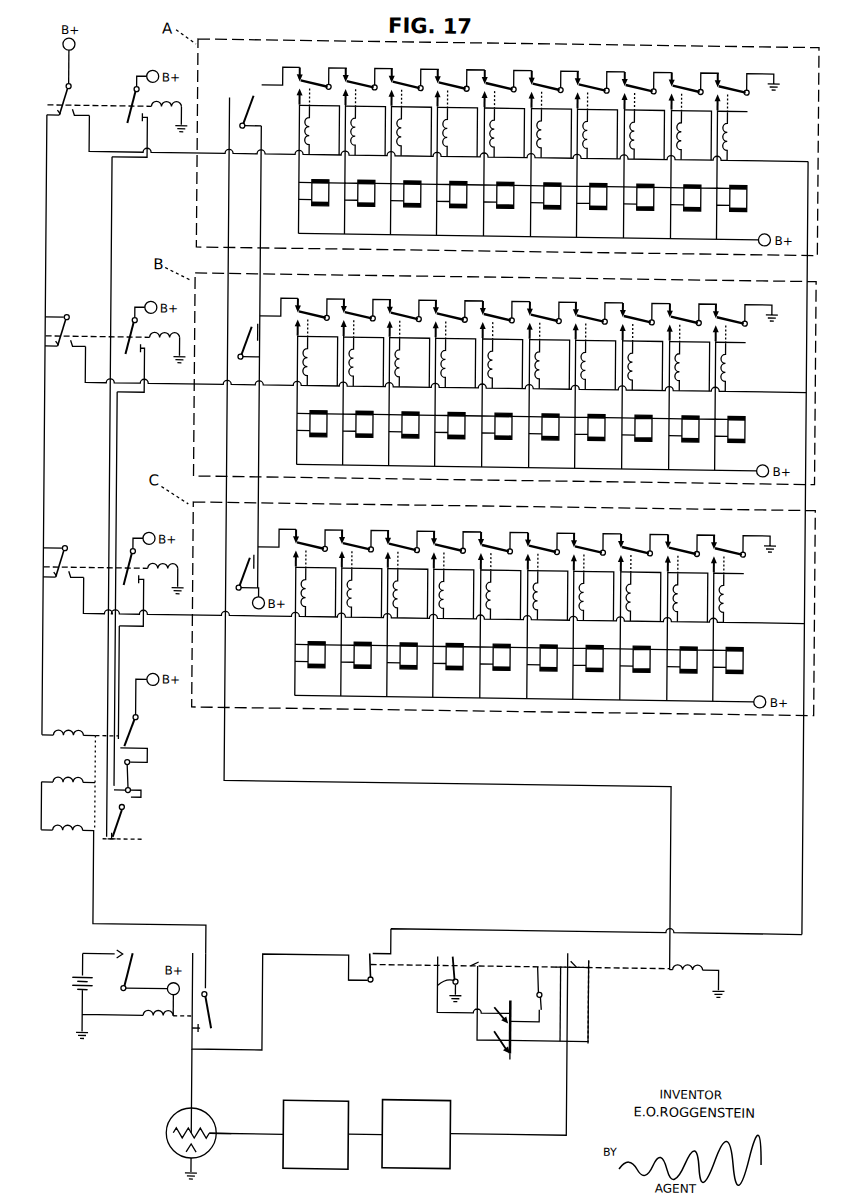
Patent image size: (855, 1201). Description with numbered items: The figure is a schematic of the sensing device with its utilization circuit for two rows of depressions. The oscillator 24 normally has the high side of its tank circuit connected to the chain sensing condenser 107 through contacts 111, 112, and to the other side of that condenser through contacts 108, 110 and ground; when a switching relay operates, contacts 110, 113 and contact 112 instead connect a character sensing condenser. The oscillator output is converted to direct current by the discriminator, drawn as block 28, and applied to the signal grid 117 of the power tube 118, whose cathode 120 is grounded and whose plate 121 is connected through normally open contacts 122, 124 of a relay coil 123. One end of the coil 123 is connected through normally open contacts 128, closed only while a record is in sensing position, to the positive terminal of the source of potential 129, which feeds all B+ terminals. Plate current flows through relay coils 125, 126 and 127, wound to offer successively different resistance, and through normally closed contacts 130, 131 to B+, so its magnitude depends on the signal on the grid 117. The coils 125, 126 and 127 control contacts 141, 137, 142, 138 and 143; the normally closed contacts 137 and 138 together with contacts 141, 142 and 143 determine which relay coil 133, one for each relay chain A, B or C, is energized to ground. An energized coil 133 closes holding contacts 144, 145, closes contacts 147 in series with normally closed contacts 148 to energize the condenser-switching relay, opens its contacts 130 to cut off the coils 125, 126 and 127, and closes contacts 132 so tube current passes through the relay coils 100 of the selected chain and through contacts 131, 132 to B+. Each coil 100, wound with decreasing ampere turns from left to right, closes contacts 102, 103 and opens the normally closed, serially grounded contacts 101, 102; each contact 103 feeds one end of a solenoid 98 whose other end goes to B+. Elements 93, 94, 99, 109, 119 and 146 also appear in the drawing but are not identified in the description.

The oscillator 24 is at (426, 1096).
The discriminator 28 is at (326, 1098).
The relay contact 93 is at (597, 1014).
The rectifier element 94 is at (520, 1050).
The solenoid 98 is at (321, 205).
The relay contact 99 is at (568, 1012).
The relay coil 100 is at (310, 133).
The contacts 101 is at (303, 77).
The contacts 102 is at (357, 87).
The contacts 103 is at (296, 97).
The chain sensing condenser 107 is at (503, 1018).
The contacts 108 is at (457, 952).
The contact 109 is at (482, 956).
The contacts 110 is at (448, 982).
The contacts 111 is at (549, 960).
The contacts 112 is at (546, 1008).
The contacts 113 is at (582, 957).
The signal grid 117 is at (230, 1124).
The power tube 118 is at (693, 959).
The electrode 119 is at (205, 1112).
The cathode 120 is at (196, 1165).
The plate 121 is at (190, 1116).
The contacts 122 is at (205, 1033).
The relay coil 123 is at (153, 1022).
The contacts 124 is at (222, 1010).
The relay coil 125 is at (64, 733).
The relay coil 126 is at (64, 780).
The relay coil 127 is at (64, 828).
The contacts 128 is at (136, 950).
The source of potential 129 is at (76, 985).
The contacts 130 is at (58, 113).
The contacts 131 is at (71, 93).
The contacts 132 is at (73, 121).
The relay coil 133 is at (172, 114).
The contacts 137 is at (145, 746).
The contacts 138 is at (149, 795).
The contact 141 is at (153, 755).
The contact 142 is at (134, 808).
The contact 143 is at (116, 846).
The contacts 144 is at (130, 117).
The contacts 145 is at (142, 122).
The armature 146 is at (250, 322).
The contacts 147 is at (237, 93).
The contacts 148 is at (252, 556).